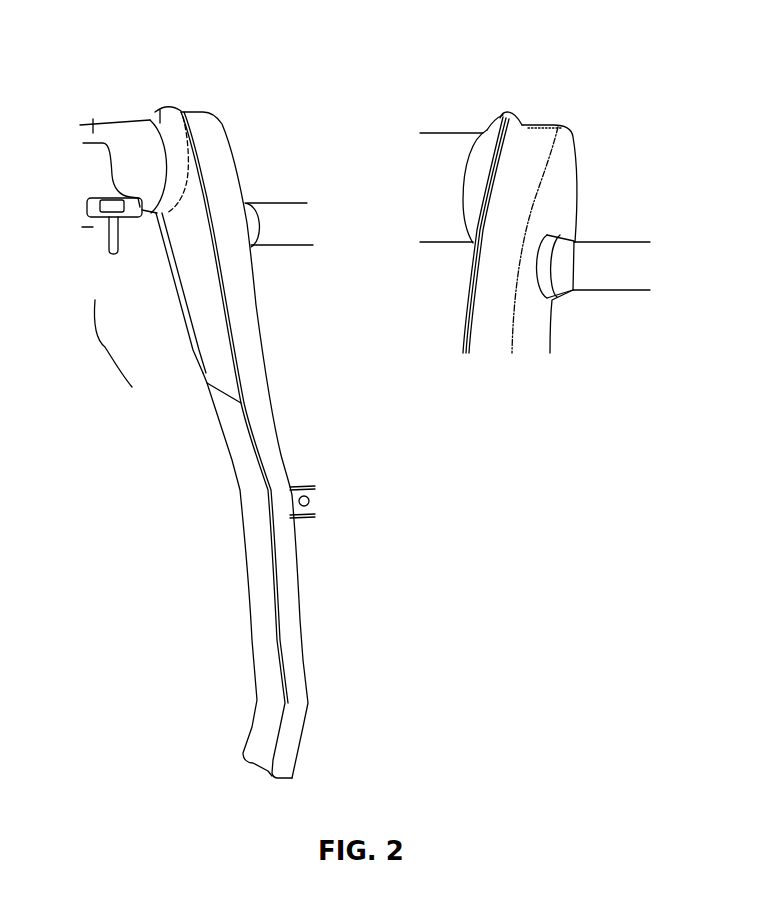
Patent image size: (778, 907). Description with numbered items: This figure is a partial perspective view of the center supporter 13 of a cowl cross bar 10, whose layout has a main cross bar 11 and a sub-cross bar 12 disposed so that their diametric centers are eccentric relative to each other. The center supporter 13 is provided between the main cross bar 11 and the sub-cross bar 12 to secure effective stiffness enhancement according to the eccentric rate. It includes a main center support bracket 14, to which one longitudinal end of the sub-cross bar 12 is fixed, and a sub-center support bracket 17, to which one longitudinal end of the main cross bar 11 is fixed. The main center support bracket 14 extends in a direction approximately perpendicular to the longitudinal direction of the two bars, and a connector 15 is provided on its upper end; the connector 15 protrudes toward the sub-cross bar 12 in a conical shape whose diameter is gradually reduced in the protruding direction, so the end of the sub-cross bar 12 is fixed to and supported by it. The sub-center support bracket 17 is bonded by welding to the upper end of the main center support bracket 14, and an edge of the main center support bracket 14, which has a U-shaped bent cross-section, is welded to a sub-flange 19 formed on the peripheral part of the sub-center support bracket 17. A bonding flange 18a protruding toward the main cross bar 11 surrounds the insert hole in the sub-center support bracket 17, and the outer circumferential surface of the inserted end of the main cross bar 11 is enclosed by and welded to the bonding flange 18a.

The cowl cross bar 10 is at (400, 111).
The main cross bar 11 is at (92, 128).
The sub-cross bar 12 is at (283, 210).
The center supporter 13 is at (106, 343).
The main center support bracket 14 is at (243, 338).
The connector 15 is at (547, 237).
The sub-center support bracket 17 is at (193, 300).
The bonding flange 18a is at (160, 117).
The sub-flange 19 is at (178, 110).